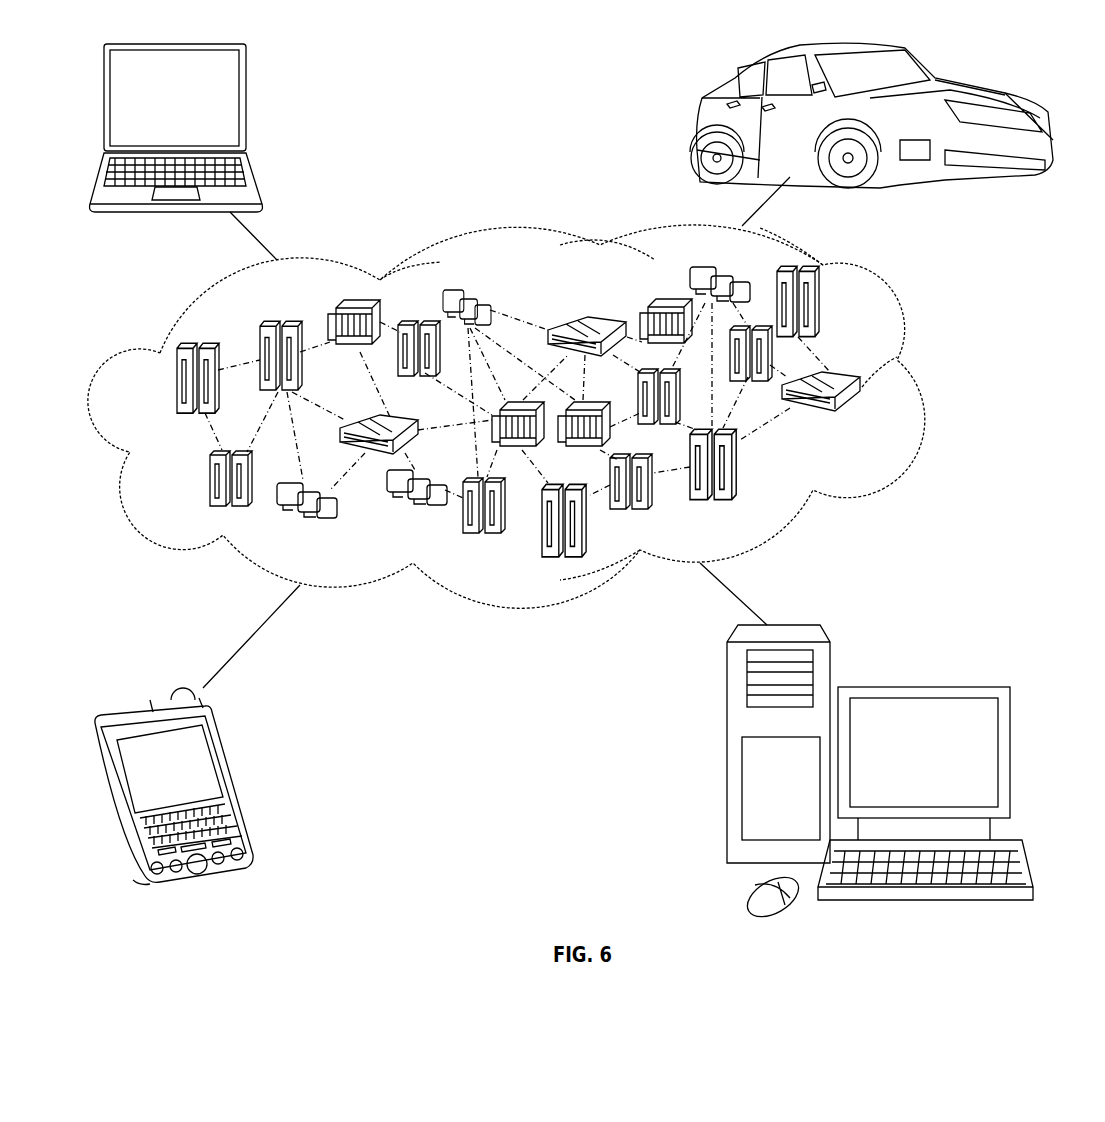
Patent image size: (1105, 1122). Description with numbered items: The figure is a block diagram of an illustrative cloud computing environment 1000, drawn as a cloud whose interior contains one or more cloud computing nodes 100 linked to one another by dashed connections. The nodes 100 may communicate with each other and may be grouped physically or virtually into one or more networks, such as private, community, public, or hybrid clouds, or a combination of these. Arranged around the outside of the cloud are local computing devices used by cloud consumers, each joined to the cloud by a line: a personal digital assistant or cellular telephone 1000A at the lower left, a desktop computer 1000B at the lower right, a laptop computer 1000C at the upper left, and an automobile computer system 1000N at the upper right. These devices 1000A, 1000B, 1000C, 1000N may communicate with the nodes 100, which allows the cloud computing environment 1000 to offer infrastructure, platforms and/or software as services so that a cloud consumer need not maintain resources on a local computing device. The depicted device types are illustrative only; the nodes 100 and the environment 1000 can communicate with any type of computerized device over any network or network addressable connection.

The cloud computing environment 1000 is at (912, 390).
The cloud computing nodes 100 is at (863, 420).
The personal digital assistant (PDA) or cellular telephone 1000A is at (237, 782).
The desktop computer 1000B is at (920, 686).
The laptop computer 1000C is at (247, 108).
The automobile computer system 1000N is at (697, 125).